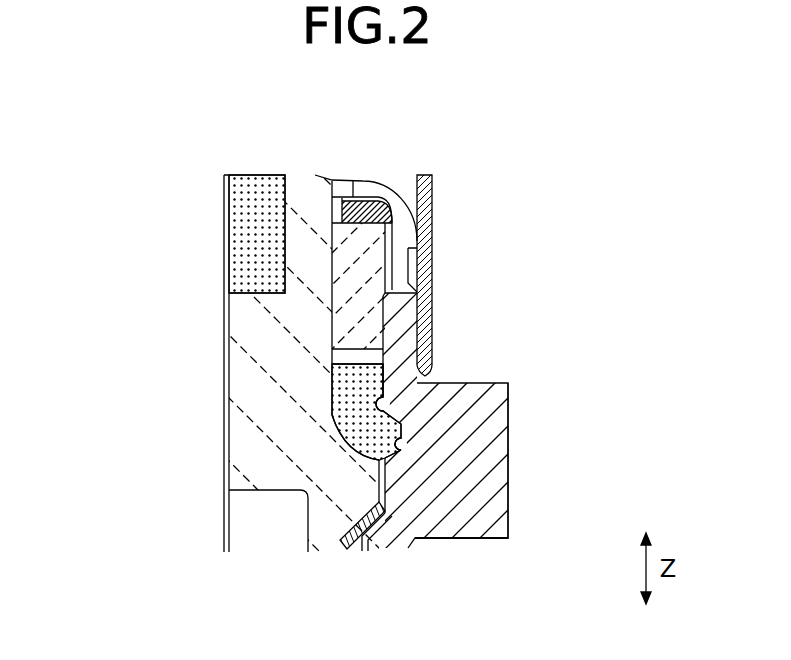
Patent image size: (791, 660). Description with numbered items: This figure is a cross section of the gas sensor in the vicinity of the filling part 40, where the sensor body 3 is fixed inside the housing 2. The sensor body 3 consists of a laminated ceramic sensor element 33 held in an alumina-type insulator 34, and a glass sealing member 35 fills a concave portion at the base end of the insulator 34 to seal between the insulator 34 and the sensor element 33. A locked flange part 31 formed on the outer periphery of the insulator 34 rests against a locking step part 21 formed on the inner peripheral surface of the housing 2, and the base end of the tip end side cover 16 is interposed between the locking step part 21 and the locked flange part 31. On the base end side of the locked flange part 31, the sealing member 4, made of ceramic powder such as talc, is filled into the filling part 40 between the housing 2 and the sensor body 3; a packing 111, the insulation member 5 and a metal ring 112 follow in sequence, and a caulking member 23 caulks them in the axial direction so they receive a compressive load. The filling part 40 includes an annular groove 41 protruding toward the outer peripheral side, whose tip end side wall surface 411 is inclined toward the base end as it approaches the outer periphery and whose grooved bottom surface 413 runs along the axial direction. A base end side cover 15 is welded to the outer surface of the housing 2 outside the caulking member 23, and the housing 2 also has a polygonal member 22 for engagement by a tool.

The housing 2 is at (465, 527).
The sensor body 3 is at (317, 325).
The sealing member 4 is at (345, 395).
The insulation member 5 is at (332, 271).
The base end side cover 15 is at (432, 192).
The tip end side cover 16 is at (354, 545).
The locking step part 21 is at (378, 540).
The polygonal member 22 is at (478, 477).
The caulking member 23 is at (373, 193).
The locked flange part 31 is at (370, 465).
The sensor element 33 is at (207, 486).
The insulator 34 is at (250, 320).
The glass sealing member 35 is at (258, 190).
The filling part 40 is at (332, 420).
The annular groove 41 is at (425, 421).
The packing 111 is at (355, 352).
The metal ring 112 is at (365, 196).
The tip end side wall surface 411 is at (383, 459).
The grooved bottom surface 413 is at (386, 402).